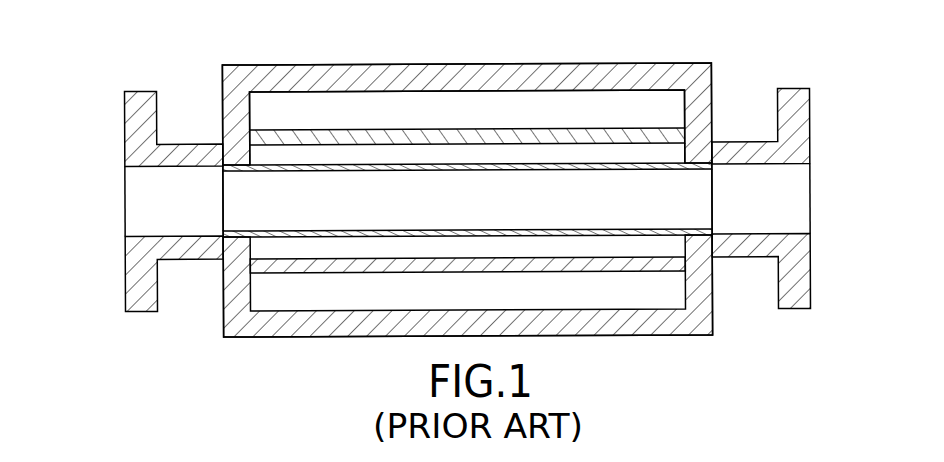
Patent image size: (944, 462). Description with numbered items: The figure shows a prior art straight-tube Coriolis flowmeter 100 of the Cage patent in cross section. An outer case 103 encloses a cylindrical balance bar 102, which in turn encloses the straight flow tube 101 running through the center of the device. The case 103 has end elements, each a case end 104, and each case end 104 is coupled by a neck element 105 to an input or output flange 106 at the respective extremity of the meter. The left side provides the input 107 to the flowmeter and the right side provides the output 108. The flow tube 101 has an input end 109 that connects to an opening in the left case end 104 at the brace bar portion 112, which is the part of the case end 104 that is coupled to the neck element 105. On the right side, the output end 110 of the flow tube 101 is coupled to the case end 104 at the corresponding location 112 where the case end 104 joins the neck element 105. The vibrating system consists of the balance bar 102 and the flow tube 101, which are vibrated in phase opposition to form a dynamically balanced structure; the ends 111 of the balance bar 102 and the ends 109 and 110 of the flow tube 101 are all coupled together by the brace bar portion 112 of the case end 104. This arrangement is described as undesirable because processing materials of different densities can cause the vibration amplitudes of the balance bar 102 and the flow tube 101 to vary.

The Coriolis flowmeter 100 is at (555, 42).
The flow tube 101 is at (423, 212).
The balance bar 102 is at (447, 129).
The case 103 is at (593, 64).
The case end 104 is at (223, 87).
The neck element 105 is at (217, 144).
The flange 106 is at (130, 82).
The input 107 is at (137, 202).
The output 108 is at (783, 200).
The input end 109 is at (223, 220).
The output end 110 is at (713, 212).
The ends of balance bar 111 is at (252, 130).
The brace bar portion 112 is at (252, 165).